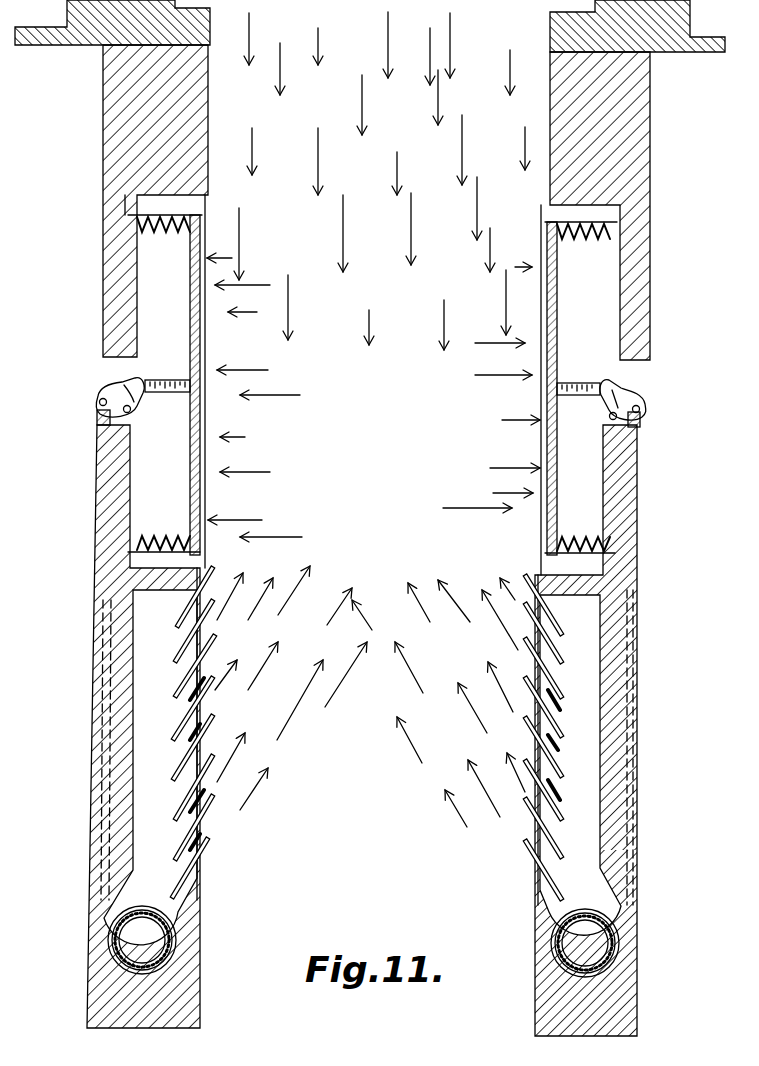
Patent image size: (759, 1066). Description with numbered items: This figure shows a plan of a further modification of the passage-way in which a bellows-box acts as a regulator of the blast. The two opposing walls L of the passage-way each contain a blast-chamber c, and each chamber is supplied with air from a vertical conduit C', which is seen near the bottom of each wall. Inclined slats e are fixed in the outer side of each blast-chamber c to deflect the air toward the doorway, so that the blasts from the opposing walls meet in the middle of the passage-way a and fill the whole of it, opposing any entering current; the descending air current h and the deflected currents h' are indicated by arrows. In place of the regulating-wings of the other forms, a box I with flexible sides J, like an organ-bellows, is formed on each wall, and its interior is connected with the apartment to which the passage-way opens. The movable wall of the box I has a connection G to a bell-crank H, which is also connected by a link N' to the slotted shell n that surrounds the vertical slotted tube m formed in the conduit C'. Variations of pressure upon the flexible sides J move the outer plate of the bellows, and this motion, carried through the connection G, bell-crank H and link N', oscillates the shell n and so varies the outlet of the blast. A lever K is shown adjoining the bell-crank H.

The furnace wall L is at (379, 533).
The flexible sides J is at (158, 234).
The box I is at (190, 312).
The bell-crank H is at (117, 394).
The link N' is at (368, 657).
The connection G is at (167, 393).
The lever K is at (622, 372).
The descending air current h is at (382, 181).
The deflected air current h' is at (373, 397).
The combustion chamber a is at (370, 616).
The blast-chambers c is at (360, 782).
The inclined slats e is at (213, 713).
The slotted shell n is at (142, 907).
The vertical conduit C' is at (363, 941).
The vertical slotted tube m is at (170, 955).